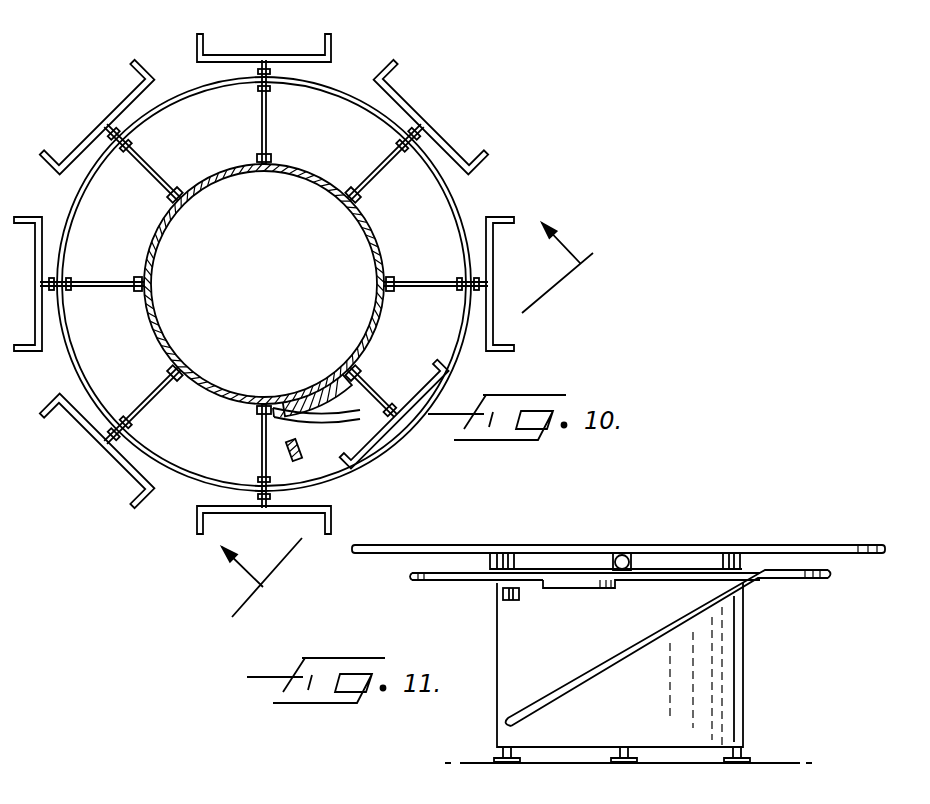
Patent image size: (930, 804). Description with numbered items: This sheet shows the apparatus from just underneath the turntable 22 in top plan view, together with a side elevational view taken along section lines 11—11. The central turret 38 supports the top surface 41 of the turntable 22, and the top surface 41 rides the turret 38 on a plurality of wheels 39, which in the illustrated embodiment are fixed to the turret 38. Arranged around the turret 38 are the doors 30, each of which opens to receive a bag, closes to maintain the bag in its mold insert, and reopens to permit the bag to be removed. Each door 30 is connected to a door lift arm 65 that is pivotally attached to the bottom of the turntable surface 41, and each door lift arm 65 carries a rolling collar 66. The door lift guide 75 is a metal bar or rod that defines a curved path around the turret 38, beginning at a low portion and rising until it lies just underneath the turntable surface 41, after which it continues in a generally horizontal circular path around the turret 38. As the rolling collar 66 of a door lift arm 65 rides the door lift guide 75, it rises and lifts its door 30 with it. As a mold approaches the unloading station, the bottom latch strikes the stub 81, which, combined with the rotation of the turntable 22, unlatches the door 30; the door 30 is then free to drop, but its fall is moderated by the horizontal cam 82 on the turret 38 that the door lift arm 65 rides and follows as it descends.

In FIG. 10, the section lines 11— 11 is at (418, 422).
In FIG. 11, the turntable 22 is at (408, 606).
In FIG. 10, the door 30 is at (258, 57).
In FIG. 10, the turret 38 is at (157, 320).
In FIG. 11, the turret 38 is at (655, 711).
In FIG. 11, the wheels 39 is at (500, 558).
In FIG. 11, the top surface 41 is at (676, 546).
In FIG. 10, the door lift arm 65 is at (152, 162).
In FIG. 10, the rolling collar 66 is at (275, 85).
In FIG. 10, the door lift guide 75 is at (357, 413).
In FIG. 11, the door lift guide 75 is at (642, 640).
In FIG. 10, the stub 81 is at (298, 447).
In FIG. 10, the horizontal cam 82 is at (316, 378).